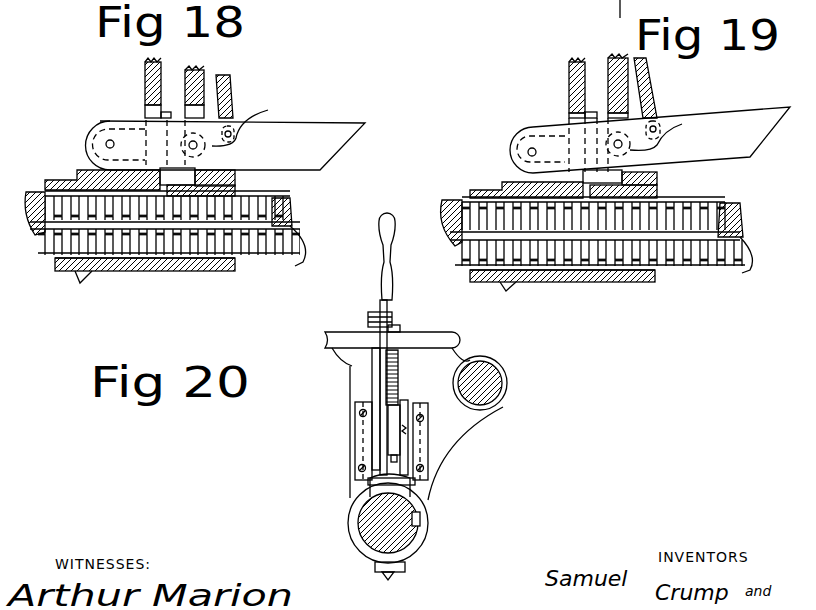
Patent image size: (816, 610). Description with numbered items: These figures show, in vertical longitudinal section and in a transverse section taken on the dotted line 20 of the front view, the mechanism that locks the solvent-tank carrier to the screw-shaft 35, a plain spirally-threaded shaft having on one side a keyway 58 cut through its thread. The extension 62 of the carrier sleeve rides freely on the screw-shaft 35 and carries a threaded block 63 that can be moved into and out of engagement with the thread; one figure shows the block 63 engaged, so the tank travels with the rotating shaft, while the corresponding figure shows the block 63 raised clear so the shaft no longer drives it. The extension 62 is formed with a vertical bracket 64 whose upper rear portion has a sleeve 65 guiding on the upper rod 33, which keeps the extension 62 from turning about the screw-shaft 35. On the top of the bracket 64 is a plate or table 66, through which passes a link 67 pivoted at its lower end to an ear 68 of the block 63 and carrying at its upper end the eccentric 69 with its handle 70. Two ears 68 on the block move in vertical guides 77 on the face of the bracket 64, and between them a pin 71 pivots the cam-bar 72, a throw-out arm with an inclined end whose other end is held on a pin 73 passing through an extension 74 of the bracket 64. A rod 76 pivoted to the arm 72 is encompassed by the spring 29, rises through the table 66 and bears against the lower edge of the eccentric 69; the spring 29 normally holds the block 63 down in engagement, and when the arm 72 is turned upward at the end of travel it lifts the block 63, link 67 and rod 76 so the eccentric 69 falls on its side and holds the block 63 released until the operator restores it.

In FIG. 19, the section line 20 is at (614, 17).
In FIG. 20, the spring 29 is at (400, 361).
In FIG. 20, the upper rod 33 is at (490, 394).
In FIG. 18, the screw-shaft 35 is at (284, 264).
In FIG. 19, the screw-shaft 35 is at (728, 278).
In FIG. 20, the screw-shaft 35 is at (410, 534).
In FIG. 18, the keyway 58 is at (293, 230).
In FIG. 19, the keyway 58 is at (744, 240).
In FIG. 20, the keyway 58 is at (421, 520).
In FIG. 18, the extension 62 is at (52, 183).
In FIG. 19, the extension 62 is at (494, 192).
In FIG. 20, the extension 62 is at (352, 536).
In FIG. 18, the threaded block 63 is at (236, 185).
In FIG. 19, the threaded block 63 is at (660, 188).
In FIG. 20, the threaded block 63 is at (368, 496).
In FIG. 18, the vertical bracket 64 is at (146, 64).
In FIG. 19, the vertical bracket 64 is at (571, 82).
In FIG. 20, the vertical bracket 64 is at (357, 385).
In FIG. 20, the sleeve 65 is at (508, 383).
In FIG. 20, the plate or table 66 is at (331, 342).
In FIG. 18, the link 67 is at (189, 74).
In FIG. 19, the link 67 is at (613, 72).
In FIG. 20, the link 67 is at (372, 360).
In FIG. 18, the ears 68 is at (210, 150).
In FIG. 19, the ears 68 is at (632, 148).
In FIG. 20, the ears 68 is at (402, 408).
In FIG. 20, the eccentric 69 is at (389, 312).
In FIG. 20, the handle 70 is at (393, 242).
In FIG. 18, the pin 71 is at (251, 119).
In FIG. 19, the pin 71 is at (667, 133).
In FIG. 20, the pin 71 is at (410, 430).
In FIG. 18, the cam-bar 72 is at (329, 128).
In FIG. 19, the cam-bar 72 is at (731, 118).
In FIG. 20, the cam-bar 72 is at (420, 481).
In FIG. 18, the pin 73 is at (106, 141).
In FIG. 19, the pin 73 is at (528, 148).
In FIG. 18, the extension 74 is at (93, 160).
In FIG. 19, the extension 74 is at (512, 165).
In FIG. 18, the rod 76 is at (232, 88).
In FIG. 19, the rod 76 is at (652, 86).
In FIG. 20, the rod 76 is at (401, 332).
In FIG. 20, the vertical guides 77 is at (357, 446).